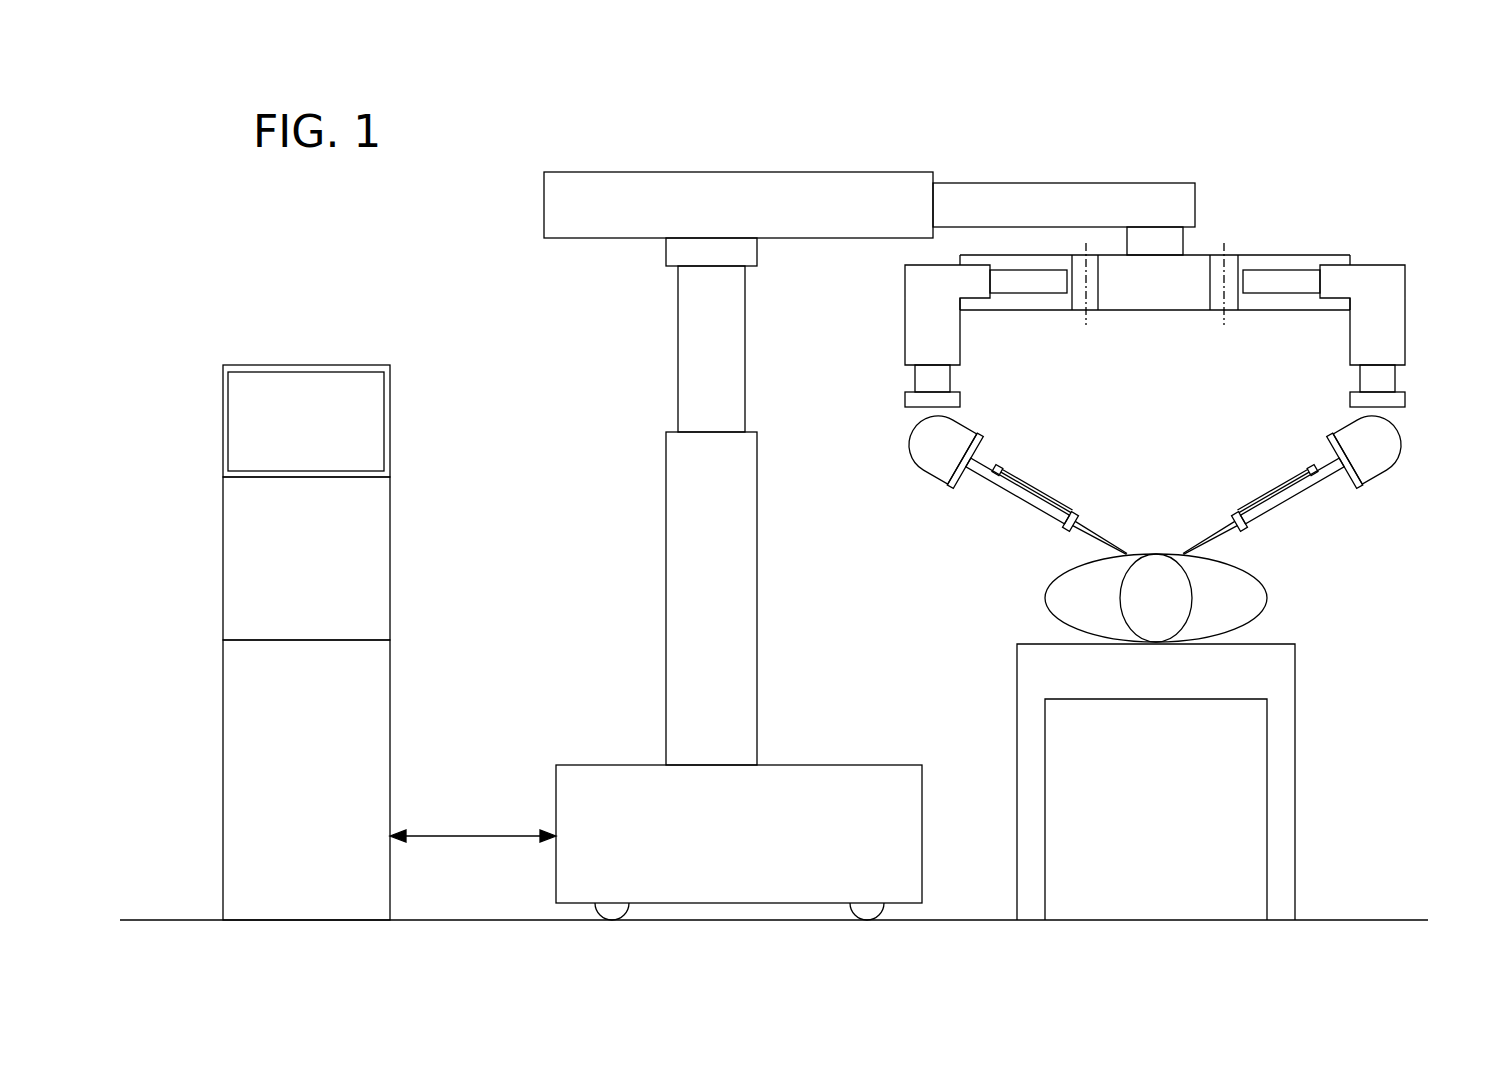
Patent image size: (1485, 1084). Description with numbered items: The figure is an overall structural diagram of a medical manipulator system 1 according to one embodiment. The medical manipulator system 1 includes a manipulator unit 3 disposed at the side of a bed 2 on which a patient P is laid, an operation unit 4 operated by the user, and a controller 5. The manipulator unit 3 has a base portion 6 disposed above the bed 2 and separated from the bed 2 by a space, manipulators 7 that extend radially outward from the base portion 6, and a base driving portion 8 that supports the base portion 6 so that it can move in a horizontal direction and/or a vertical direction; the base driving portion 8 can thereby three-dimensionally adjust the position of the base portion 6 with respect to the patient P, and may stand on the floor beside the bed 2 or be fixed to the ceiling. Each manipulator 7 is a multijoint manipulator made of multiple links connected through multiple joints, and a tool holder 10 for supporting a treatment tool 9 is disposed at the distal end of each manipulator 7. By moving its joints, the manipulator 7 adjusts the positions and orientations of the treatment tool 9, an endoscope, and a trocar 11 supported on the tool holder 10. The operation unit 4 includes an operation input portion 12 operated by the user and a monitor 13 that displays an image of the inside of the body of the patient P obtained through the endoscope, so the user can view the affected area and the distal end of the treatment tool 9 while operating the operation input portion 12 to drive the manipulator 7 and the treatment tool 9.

The medical manipulator system 1 is at (1076, 158).
The bed 2 is at (1304, 679).
The manipulator unit 3 is at (1248, 216).
The operation unit 4 is at (212, 521).
The controller 5 is at (212, 758).
The base portion 6 is at (1300, 253).
The manipulator 7 is at (910, 484).
The base driving portion 8 is at (655, 504).
The treatment tool 9 is at (1035, 495).
The tool holder 10 is at (1000, 503).
The trocar 11 is at (1097, 527).
The operation input portion 12 is at (392, 550).
The monitor (display unit) 13 is at (392, 415).
The patient P is at (1270, 600).